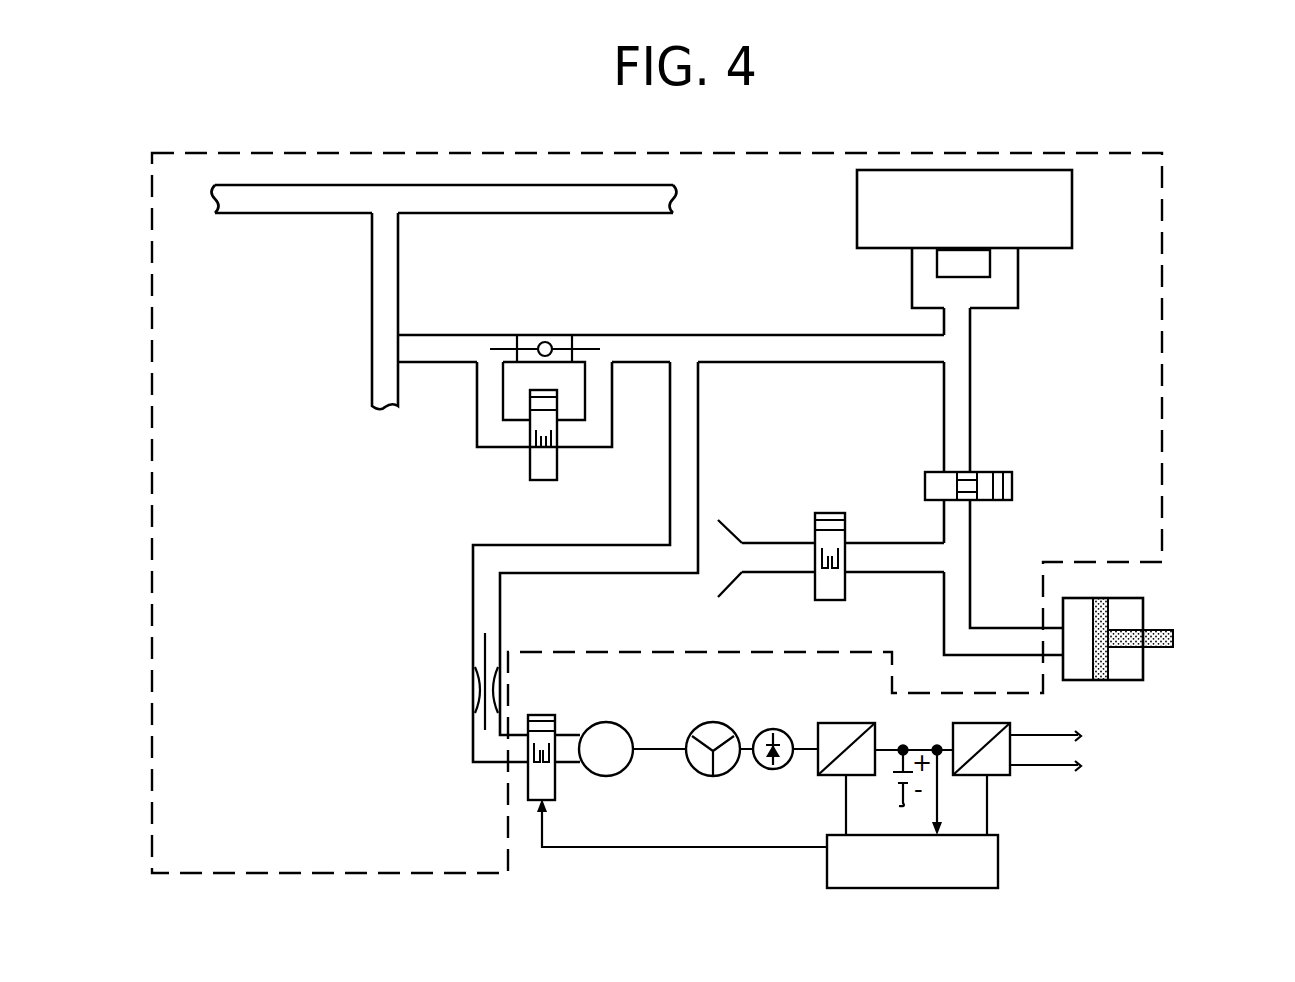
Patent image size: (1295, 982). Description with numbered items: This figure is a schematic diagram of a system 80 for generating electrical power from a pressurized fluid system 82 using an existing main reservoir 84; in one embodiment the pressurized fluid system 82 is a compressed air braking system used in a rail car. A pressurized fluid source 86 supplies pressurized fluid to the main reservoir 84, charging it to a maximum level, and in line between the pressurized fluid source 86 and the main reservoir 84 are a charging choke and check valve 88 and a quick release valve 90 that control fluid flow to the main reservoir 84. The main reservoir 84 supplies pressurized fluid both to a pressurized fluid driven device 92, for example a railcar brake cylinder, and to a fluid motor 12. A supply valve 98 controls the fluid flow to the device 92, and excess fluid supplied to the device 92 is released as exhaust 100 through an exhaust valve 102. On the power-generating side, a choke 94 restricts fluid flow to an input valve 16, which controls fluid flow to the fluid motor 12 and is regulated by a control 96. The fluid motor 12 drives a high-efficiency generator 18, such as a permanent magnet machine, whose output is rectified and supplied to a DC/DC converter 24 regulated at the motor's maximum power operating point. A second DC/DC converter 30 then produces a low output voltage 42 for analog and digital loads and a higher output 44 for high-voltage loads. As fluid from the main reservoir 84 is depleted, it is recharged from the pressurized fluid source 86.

The fluid motor 12 is at (620, 726).
The input valve 16 is at (545, 715).
The generator 18 is at (723, 726).
The DC/DC converter 24 is at (873, 731).
The second DC/DC converter 30 is at (990, 777).
The output voltage 42 is at (1067, 769).
The output 44 is at (1073, 731).
The system 80 is at (1083, 824).
The pressurized fluid system 82 is at (1118, 310).
The main reservoir 84 is at (857, 200).
The pressurized fluid source 86 is at (270, 214).
The charging choke and check valve 88 is at (575, 352).
The quick release valve 90 is at (527, 461).
The pressurized fluid driven device 92 is at (1143, 614).
The choke 94 is at (473, 688).
The control 96 is at (915, 888).
The supply valve 98 is at (985, 472).
The exhaust 100 is at (750, 543).
The exhaust valve 102 is at (830, 513).